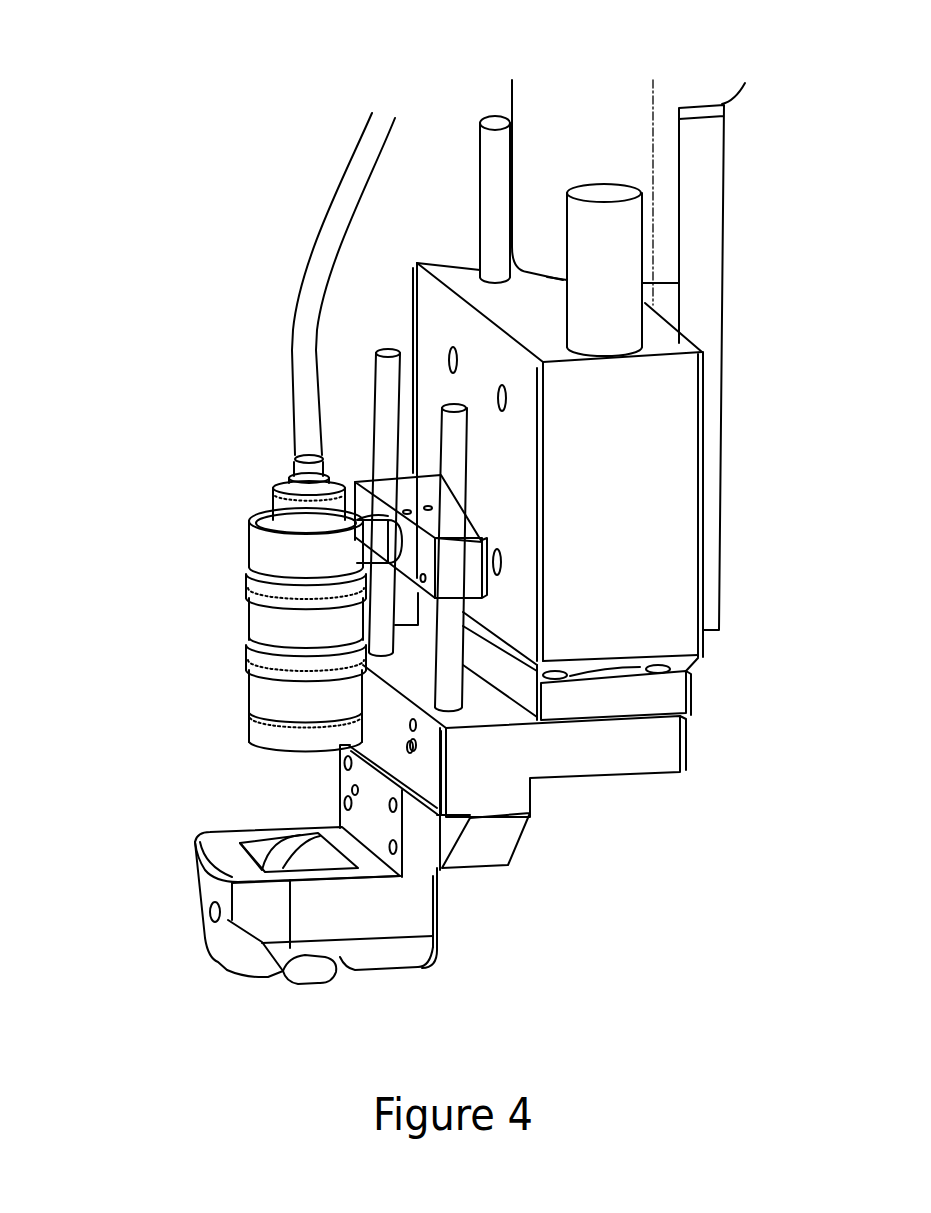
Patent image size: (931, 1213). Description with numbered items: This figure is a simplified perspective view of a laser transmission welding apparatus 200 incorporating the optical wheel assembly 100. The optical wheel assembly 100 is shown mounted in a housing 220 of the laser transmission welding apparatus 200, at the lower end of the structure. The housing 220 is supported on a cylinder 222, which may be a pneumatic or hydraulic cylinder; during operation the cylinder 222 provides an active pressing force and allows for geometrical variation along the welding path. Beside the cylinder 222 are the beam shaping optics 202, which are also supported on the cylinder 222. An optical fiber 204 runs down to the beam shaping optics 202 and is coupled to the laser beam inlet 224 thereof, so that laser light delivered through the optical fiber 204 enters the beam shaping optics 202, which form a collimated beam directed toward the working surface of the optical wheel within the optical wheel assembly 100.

The laser transmission welding apparatus 200 is at (145, 212).
The optical fiber 204 is at (331, 171).
The laser beam inlet 224 is at (299, 442).
The beam shaping optics 202 is at (230, 624).
The cylinder 222 is at (666, 533).
The housing 220 is at (424, 917).
The optical wheel assembly 100 is at (291, 995).